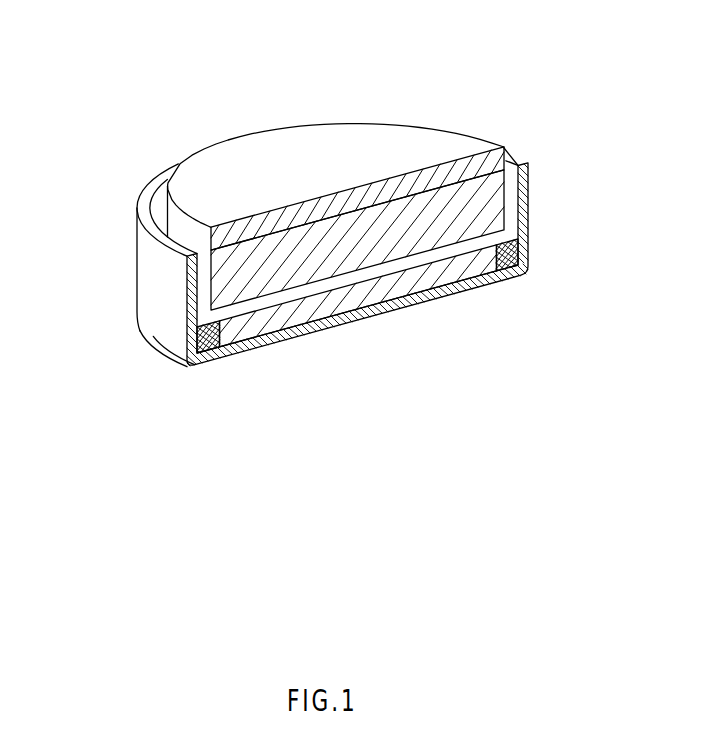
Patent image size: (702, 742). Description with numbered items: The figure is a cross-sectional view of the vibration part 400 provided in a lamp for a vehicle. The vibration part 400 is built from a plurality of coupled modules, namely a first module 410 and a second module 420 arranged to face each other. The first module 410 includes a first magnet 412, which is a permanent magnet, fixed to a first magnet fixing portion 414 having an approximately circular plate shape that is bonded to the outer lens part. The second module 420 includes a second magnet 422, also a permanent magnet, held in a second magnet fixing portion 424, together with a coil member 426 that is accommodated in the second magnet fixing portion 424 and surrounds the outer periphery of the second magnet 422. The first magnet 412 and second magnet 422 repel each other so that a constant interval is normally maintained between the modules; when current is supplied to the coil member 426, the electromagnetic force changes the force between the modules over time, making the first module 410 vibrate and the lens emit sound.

The vibration part 400 is at (173, 84).
The first module 410 is at (327, 103).
The first magnet 412 is at (446, 207).
The first magnet fixing portion 414 is at (419, 138).
The second module 420 is at (118, 237).
The second magnet 422 is at (367, 297).
The second magnet fixing portion 424 is at (147, 307).
The coil member 426 is at (518, 253).